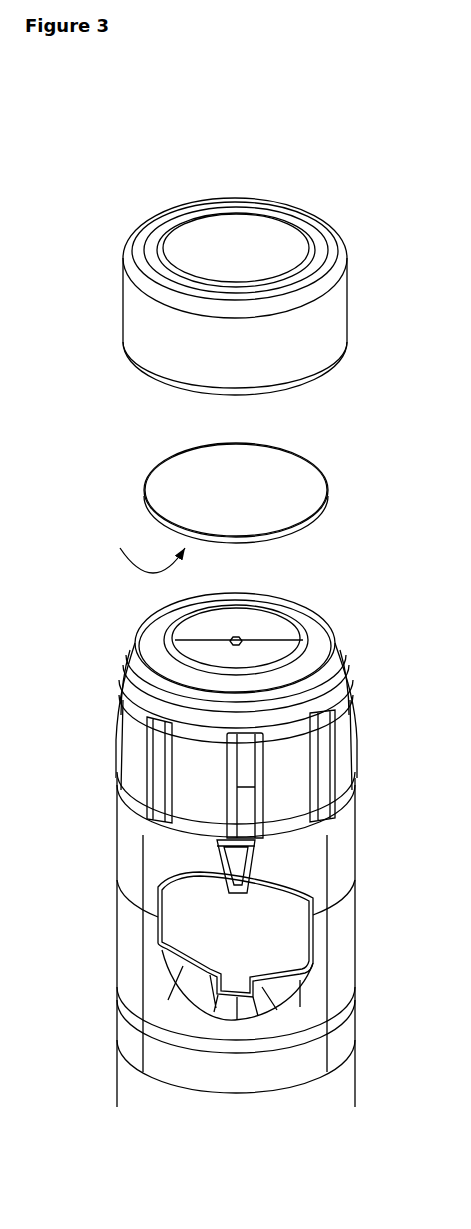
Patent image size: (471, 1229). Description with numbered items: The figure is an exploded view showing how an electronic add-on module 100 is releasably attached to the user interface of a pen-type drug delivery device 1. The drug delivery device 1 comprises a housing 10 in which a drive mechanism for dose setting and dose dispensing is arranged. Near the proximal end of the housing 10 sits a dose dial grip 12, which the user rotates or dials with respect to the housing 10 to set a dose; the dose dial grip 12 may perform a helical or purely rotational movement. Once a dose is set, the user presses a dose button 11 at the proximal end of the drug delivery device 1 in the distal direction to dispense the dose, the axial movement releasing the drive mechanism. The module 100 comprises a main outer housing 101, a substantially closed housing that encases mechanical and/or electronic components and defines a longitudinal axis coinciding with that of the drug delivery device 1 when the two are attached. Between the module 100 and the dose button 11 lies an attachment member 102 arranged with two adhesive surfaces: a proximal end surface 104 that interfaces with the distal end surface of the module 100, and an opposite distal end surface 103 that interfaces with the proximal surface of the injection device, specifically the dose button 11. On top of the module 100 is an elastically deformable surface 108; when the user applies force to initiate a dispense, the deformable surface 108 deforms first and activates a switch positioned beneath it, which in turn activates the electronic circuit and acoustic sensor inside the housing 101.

The drug delivery device 1 is at (387, 840).
The housing 10 is at (117, 830).
The dose button 11 is at (138, 648).
The dose dial grip 12 is at (118, 745).
The electronic add-on module 100 is at (117, 157).
The main outer housing 101 is at (143, 302).
The attachment member 102 is at (145, 500).
The distal end surface 103 is at (141, 547).
The proximal end surface 104 is at (188, 473).
The elastically deformable surface 108 is at (183, 232).